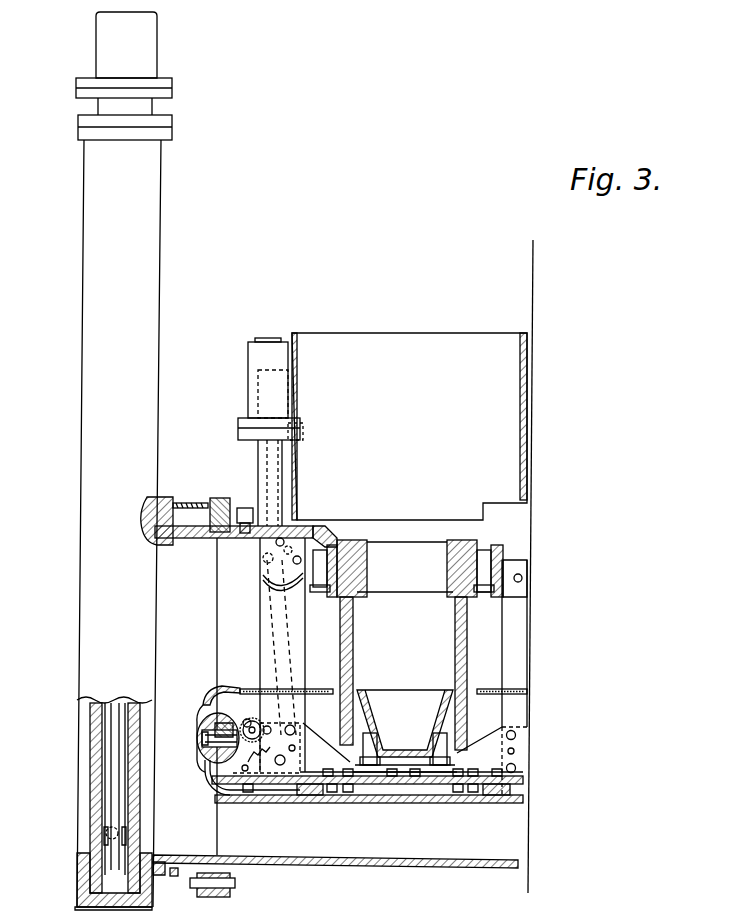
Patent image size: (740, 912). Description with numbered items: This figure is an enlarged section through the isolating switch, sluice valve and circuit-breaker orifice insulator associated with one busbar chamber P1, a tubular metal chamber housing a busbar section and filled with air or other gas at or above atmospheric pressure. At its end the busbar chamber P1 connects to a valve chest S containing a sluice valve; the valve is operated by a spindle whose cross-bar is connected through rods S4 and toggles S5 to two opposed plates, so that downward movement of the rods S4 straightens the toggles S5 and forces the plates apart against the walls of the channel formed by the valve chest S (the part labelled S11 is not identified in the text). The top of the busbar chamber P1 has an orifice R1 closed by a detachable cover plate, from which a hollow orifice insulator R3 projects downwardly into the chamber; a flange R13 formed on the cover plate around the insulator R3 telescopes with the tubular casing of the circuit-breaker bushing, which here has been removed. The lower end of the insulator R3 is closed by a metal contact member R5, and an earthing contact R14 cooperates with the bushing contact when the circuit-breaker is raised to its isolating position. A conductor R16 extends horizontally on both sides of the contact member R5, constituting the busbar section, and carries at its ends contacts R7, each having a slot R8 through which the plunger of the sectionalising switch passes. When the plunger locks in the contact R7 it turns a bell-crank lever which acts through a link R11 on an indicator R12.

The valve chest S is at (156, 234).
The column sleeve walls S11 is at (128, 741).
The rod S4 is at (113, 815).
The toggle S5 is at (77, 818).
The orifice R1 is at (250, 543).
The link R11 is at (277, 613).
The indicator R12 is at (260, 382).
The flange R13 is at (371, 345).
The earthing contact R14 is at (368, 547).
The hollow insulator R3 is at (353, 633).
The metal contact member R5 is at (407, 698).
The contact R7 is at (200, 752).
The slot R8 is at (203, 718).
The conductor R16 is at (290, 782).
The busbar chamber P1 is at (498, 807).